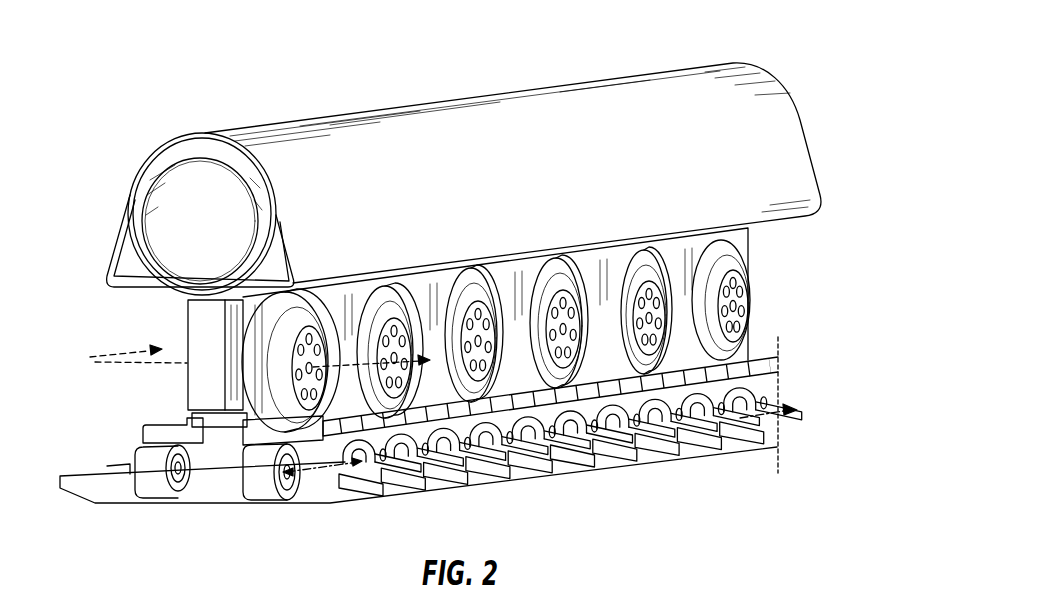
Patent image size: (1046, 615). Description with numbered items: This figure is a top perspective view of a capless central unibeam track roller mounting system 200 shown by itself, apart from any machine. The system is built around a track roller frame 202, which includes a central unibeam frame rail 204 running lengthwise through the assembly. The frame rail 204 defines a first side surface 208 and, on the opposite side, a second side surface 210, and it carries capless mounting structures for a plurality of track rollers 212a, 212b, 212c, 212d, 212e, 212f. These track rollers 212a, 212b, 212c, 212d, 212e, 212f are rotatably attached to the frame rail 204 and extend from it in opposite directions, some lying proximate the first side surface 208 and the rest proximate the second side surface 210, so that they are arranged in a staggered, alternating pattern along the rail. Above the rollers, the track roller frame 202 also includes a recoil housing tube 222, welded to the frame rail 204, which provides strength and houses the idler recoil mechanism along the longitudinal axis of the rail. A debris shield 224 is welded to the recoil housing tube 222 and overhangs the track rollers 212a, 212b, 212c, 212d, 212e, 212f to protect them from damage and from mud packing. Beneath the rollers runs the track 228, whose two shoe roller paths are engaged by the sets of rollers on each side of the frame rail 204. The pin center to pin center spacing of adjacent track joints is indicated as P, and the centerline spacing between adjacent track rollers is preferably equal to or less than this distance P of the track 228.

The central unibeam track roller mounting system 200 is at (176, 58).
The track roller frame 202 is at (589, 78).
The central unibeam frame rail 204 is at (748, 240).
The first side surface 208 is at (749, 268).
The second side surface 210 is at (188, 323).
The track roller 212a is at (331, 297).
The track roller 212b is at (413, 274).
The track roller 212c is at (500, 262).
The track roller 212d is at (582, 250).
The track roller 212e is at (652, 273).
The track roller 212f is at (738, 262).
The recoil housing tube 222 is at (138, 198).
The debris shield 224 is at (262, 142).
The track 228 is at (210, 488).
The pin center to pin center distance P is at (327, 467).